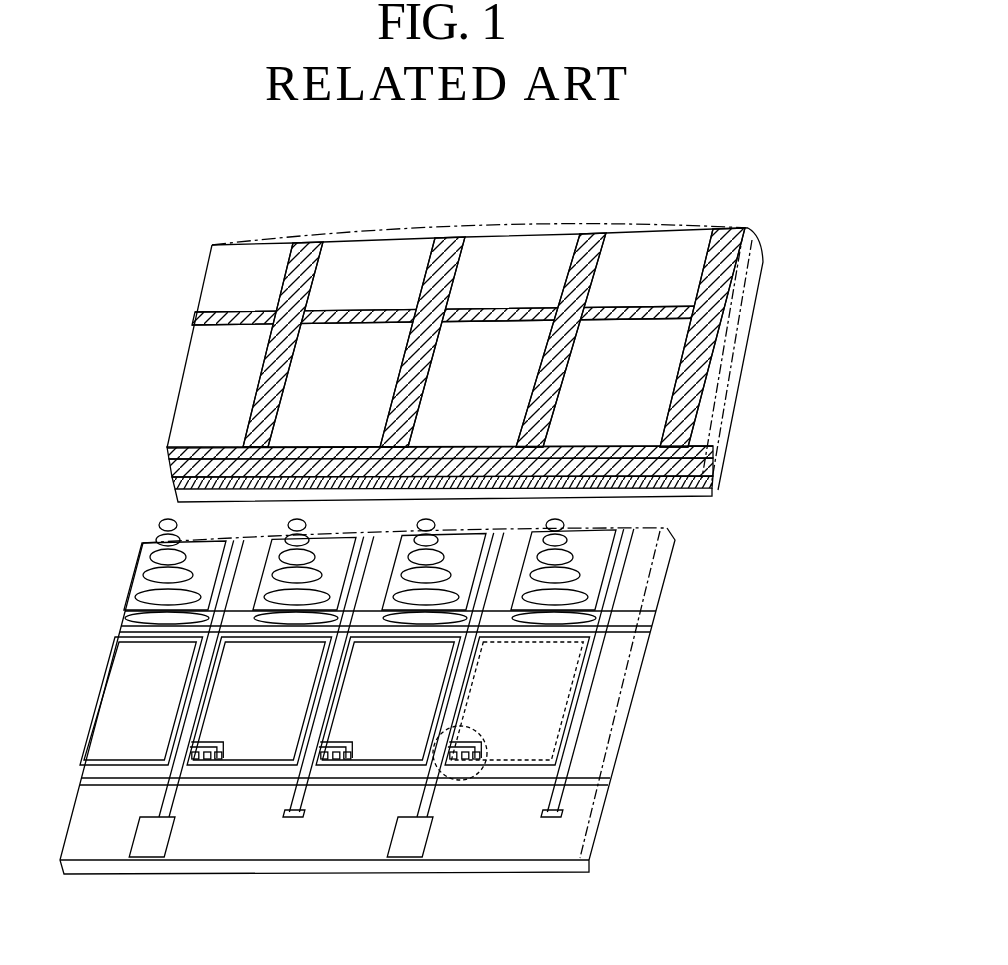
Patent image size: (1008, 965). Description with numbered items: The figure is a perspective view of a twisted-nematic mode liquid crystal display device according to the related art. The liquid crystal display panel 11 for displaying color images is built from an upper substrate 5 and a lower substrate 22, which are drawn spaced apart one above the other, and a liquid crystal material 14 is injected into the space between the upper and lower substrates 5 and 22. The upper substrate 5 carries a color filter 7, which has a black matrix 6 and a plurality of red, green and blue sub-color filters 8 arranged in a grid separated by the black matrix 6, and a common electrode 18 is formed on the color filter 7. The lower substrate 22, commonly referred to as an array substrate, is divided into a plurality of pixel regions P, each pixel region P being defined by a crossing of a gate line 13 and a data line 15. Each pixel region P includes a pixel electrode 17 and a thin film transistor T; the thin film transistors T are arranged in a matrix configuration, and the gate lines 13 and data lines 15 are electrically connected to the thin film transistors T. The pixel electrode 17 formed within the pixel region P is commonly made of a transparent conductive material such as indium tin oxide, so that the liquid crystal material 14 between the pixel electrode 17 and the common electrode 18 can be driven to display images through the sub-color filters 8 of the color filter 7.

The upper substrate 5 is at (167, 473).
The black matrix 6 is at (745, 311).
The color filter 7 is at (838, 277).
The color filter 8 is at (695, 268).
The liquid crystal display panel 11 is at (742, 743).
The gate line 13 is at (560, 778).
The liquid crystal material 14 is at (575, 580).
The data line 15 is at (413, 805).
The pixel electrode 17 is at (560, 738).
The common electrode 18 is at (718, 490).
The lower substrate 22 is at (550, 865).
The pixel region P is at (575, 680).
The thin film transistor T is at (472, 772).